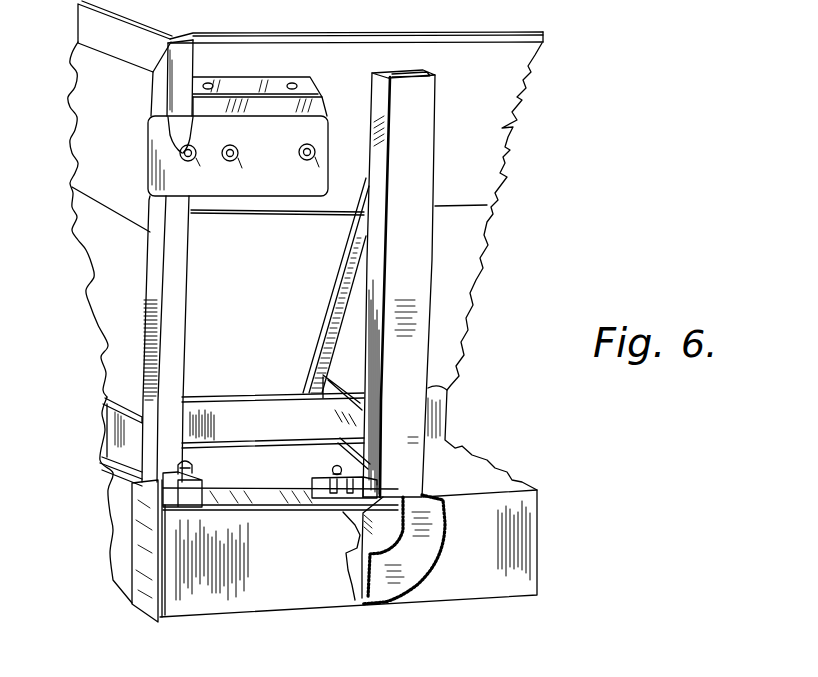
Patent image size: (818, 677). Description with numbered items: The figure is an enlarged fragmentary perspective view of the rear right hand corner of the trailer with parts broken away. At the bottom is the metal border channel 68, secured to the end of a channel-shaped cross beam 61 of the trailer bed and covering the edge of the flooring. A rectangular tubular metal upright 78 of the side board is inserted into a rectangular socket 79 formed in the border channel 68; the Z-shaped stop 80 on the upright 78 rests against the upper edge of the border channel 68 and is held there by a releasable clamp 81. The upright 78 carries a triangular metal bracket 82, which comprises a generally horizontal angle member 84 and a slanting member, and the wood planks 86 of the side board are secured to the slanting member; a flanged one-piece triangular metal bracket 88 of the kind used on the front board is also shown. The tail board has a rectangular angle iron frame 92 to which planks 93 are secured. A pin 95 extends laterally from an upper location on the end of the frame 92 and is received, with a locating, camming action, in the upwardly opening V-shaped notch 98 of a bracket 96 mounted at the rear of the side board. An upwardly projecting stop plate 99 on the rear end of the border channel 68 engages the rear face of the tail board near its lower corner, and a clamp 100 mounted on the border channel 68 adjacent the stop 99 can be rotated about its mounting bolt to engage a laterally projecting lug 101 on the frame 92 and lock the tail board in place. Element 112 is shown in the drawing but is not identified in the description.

The angle iron frame 92 is at (98, 30).
The planks 93 is at (90, 183).
The V-shaped notch 98 is at (180, 132).
The bracket 96 is at (318, 127).
The pin 95 is at (192, 161).
The wood planks 86 is at (473, 193).
The tubular metal upright 78 is at (413, 288).
The triangular metal bracket 82 is at (323, 365).
The flanged one-piece triangular metal bracket 88 is at (348, 288).
The horizontal angle member 84 is at (343, 402).
The bracket plate 112 is at (110, 438).
The lug 101 is at (106, 453).
The cross beam 61 is at (123, 563).
The stop plate 99 is at (142, 543).
The clamp 100 is at (204, 481).
The Z-shaped stop 80 is at (350, 507).
The releasable clamp 81 is at (322, 469).
The rectangular socket 79 is at (387, 497).
The border channel 68 is at (283, 600).